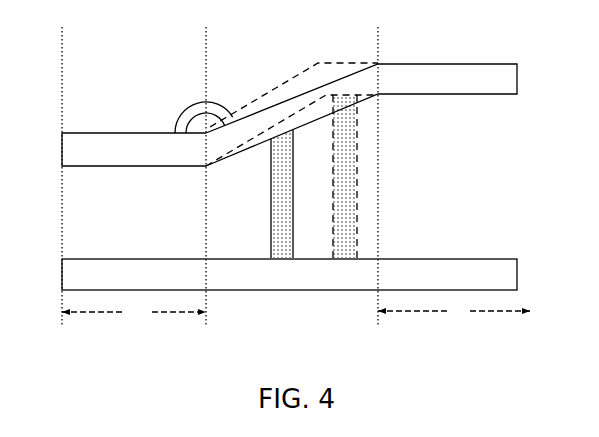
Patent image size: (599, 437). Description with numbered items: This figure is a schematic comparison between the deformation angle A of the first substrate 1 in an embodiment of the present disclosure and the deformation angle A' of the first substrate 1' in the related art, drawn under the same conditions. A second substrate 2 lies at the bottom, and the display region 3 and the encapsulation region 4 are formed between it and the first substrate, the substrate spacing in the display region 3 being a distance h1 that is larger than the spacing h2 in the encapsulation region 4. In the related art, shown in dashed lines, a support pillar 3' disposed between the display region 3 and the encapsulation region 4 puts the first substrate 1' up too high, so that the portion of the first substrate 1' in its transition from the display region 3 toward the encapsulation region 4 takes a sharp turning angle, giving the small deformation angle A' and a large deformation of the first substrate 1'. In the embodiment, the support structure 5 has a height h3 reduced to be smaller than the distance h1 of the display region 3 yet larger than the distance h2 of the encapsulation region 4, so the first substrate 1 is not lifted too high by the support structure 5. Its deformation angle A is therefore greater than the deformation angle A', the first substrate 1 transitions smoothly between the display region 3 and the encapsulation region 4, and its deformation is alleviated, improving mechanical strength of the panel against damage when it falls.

The first substrate 1 is at (361, 115).
The first substrate in the related art 1' is at (292, 102).
The second substrate 2 is at (160, 258).
The support pillar 3' is at (380, 176).
The support structure 5 is at (280, 196).
The deformation angle A is at (205, 103).
The deformation angle in the related art A' is at (180, 117).
The display region 3 is at (454, 312).
The encapsulation region 4 is at (134, 313).